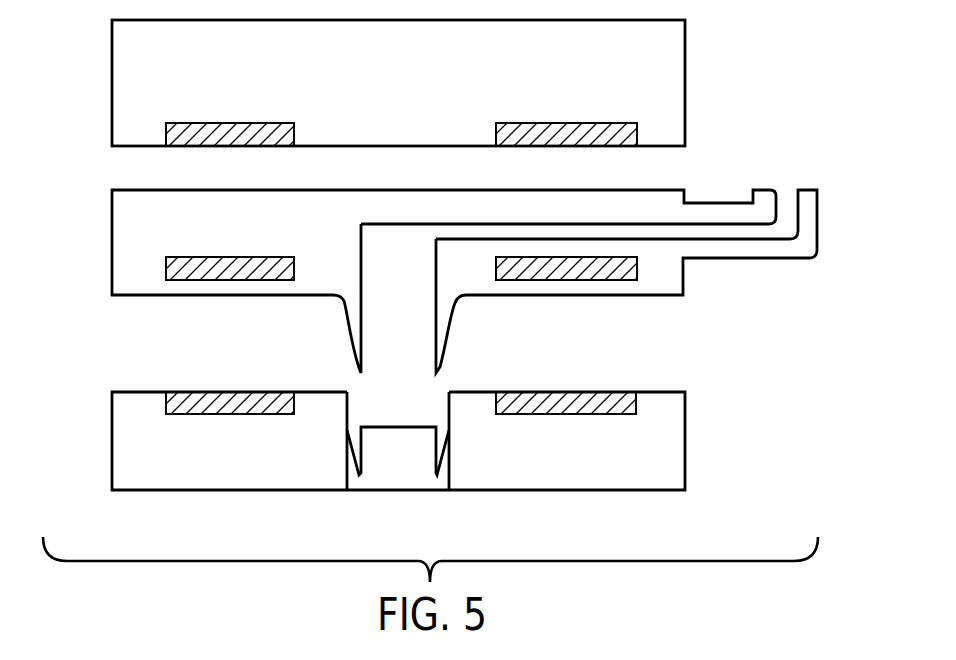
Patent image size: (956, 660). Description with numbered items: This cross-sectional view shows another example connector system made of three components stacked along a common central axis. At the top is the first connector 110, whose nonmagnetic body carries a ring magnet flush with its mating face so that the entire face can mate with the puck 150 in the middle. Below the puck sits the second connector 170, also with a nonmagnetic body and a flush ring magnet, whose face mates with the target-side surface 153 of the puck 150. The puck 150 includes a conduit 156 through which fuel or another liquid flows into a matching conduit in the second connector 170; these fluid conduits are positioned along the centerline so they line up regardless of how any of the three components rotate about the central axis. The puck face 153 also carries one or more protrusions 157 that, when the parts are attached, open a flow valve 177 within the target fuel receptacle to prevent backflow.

The first connector 110 is at (111, 83).
The puck 150 is at (111, 250).
The surface of the puck 153 is at (227, 301).
The conduit 156 is at (784, 208).
The protrusions 157 is at (443, 326).
The second connector 170 is at (111, 446).
The flow valve 177 is at (405, 483).